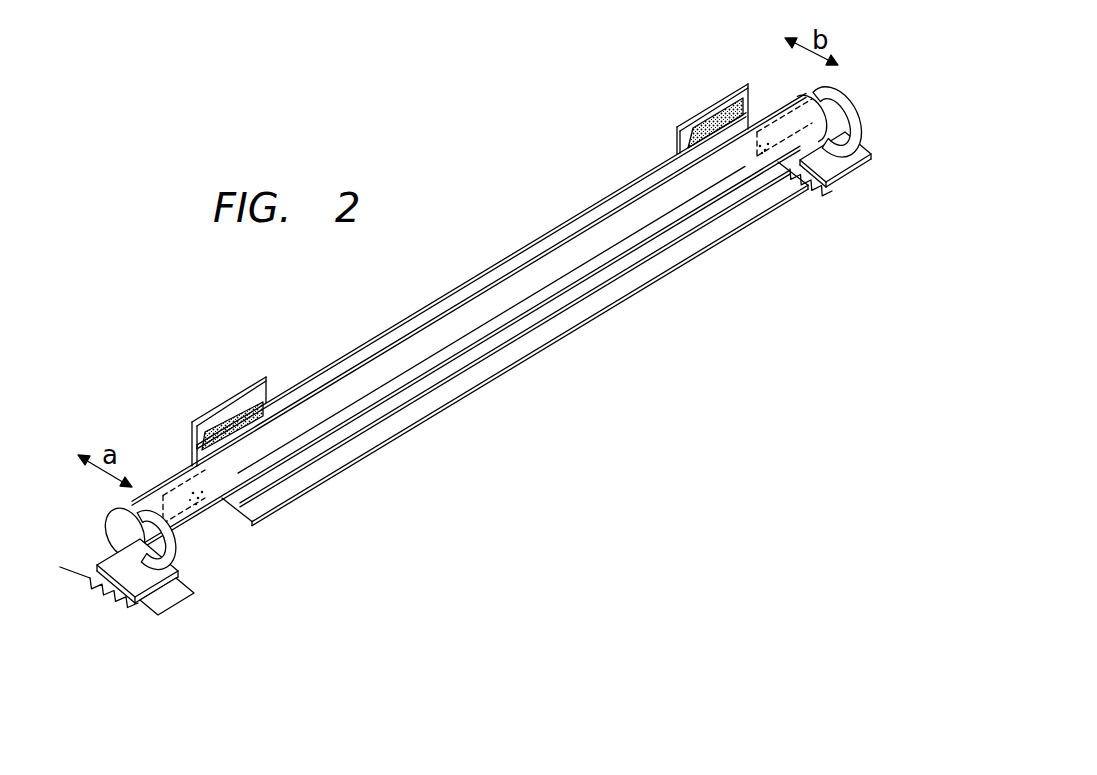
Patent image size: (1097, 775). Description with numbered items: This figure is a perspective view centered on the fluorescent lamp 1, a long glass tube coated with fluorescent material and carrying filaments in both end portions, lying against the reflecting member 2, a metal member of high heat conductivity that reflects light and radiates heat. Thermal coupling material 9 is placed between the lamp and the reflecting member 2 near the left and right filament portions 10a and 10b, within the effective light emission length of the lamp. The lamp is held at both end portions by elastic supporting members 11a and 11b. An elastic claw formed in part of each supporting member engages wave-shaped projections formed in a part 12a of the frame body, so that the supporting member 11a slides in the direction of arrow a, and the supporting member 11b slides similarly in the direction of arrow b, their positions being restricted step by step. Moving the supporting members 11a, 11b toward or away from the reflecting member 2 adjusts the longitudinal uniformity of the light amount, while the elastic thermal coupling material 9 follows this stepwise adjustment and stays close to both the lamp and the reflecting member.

The fluorescent lamp 1 is at (478, 342).
The reflecting member 2 is at (523, 247).
The thermal coupling material 9 is at (238, 414).
The left filament portion 10a is at (234, 518).
The right filament portion 10b is at (813, 68).
The elastic supporting member 11a is at (186, 569).
The elastic supporting member 11b is at (862, 154).
The frame body part 12a is at (168, 606).